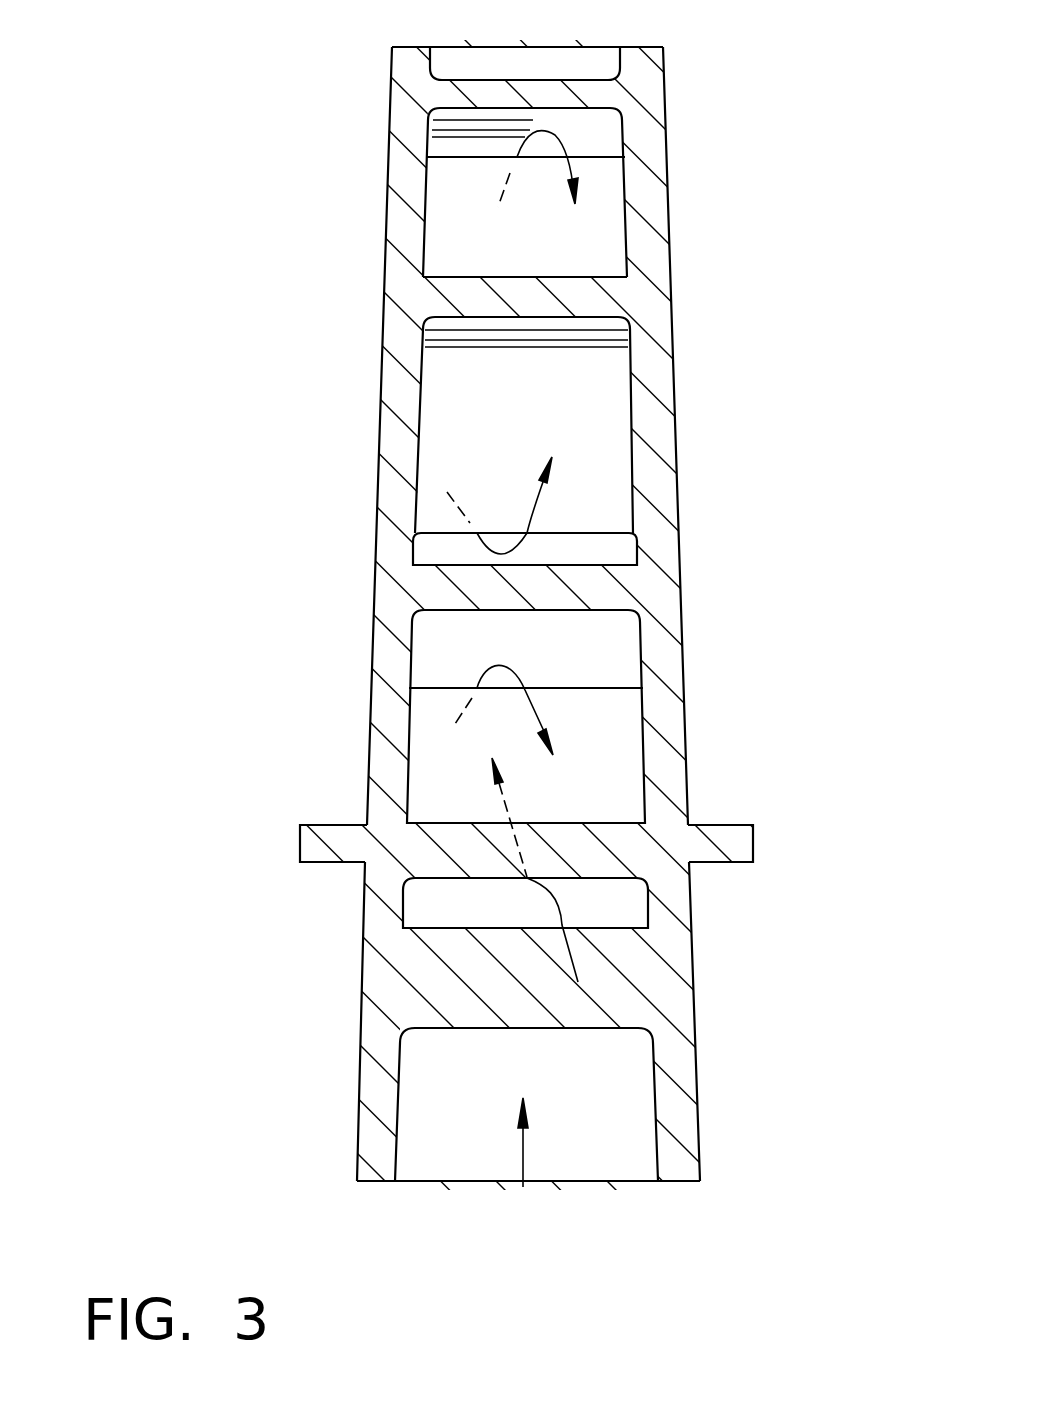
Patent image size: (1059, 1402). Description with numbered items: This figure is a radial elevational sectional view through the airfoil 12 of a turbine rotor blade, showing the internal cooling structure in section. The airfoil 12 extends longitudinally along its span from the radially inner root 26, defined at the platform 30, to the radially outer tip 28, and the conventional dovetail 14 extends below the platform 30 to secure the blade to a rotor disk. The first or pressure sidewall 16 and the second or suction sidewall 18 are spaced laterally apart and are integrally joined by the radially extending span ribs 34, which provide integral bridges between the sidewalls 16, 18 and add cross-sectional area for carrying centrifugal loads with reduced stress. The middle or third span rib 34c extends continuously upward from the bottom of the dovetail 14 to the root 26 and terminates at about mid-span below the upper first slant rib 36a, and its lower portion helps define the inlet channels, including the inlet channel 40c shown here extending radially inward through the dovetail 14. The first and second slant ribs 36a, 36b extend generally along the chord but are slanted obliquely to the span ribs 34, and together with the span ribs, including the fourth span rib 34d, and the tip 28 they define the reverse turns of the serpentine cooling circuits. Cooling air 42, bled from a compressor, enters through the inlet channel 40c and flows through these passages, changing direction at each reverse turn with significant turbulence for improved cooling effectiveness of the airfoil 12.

The airfoil 12 is at (670, 78).
The dovetail 14 is at (700, 1125).
The first or pressure sidewall 16 is at (378, 430).
The second or suction sidewall 18 is at (670, 324).
The radially inner root 26 is at (365, 822).
The radially outer tip 28 is at (391, 47).
The platform 30 is at (732, 825).
The span ribs 34 is at (592, 198).
The middle or third span rib 34c is at (425, 975).
The fourth span rib 34d is at (608, 755).
The first slant rib 36a is at (560, 276).
The second slant rib 36b is at (573, 563).
The inlet channel 40c is at (618, 1060).
The cooling air 42 is at (557, 135).